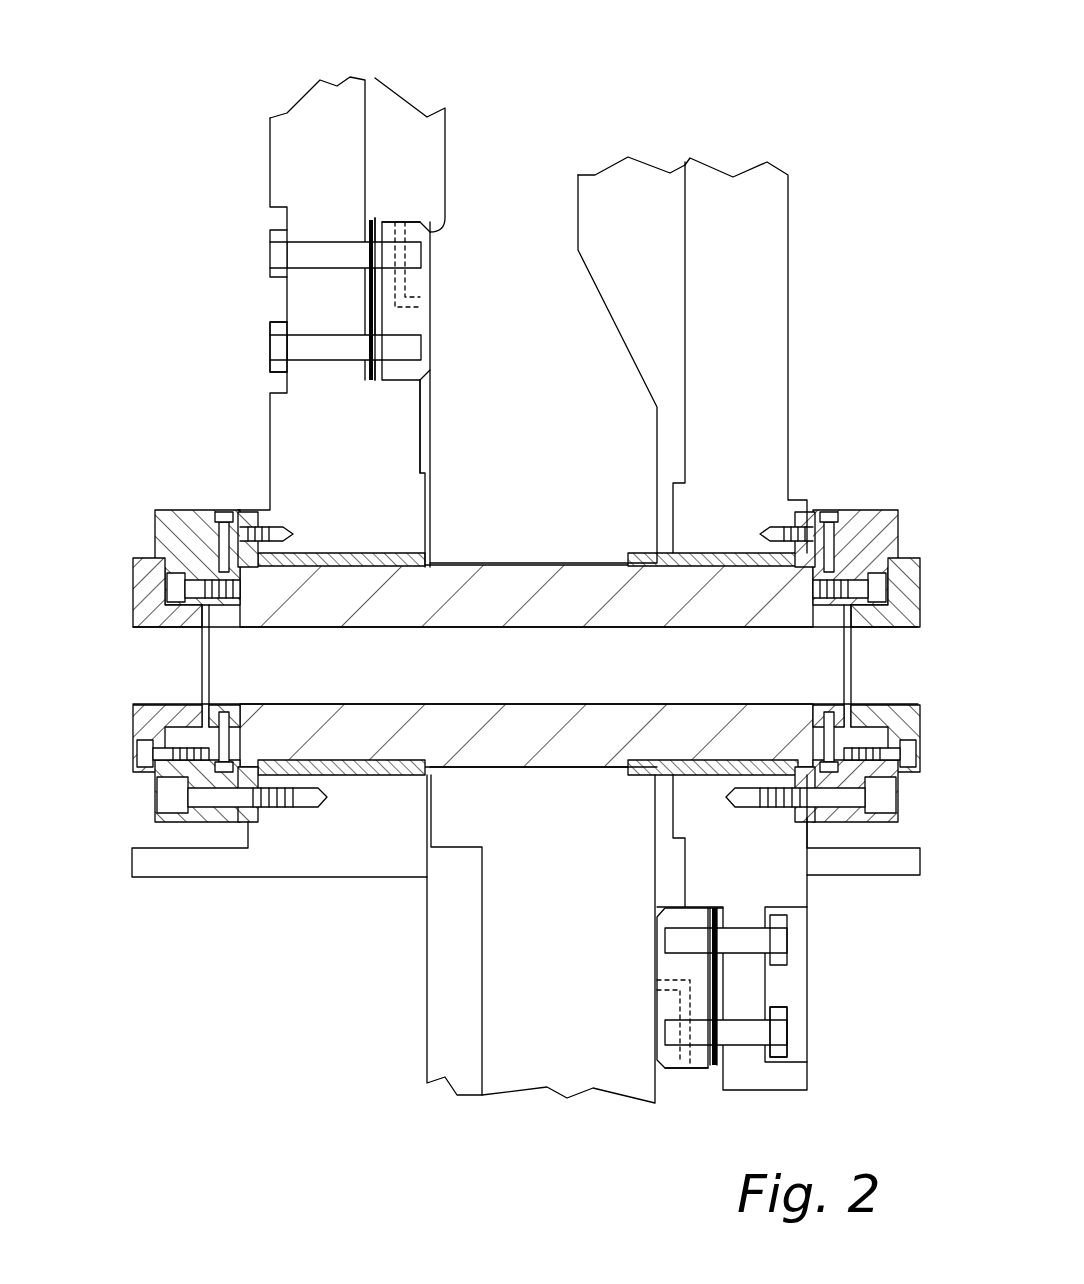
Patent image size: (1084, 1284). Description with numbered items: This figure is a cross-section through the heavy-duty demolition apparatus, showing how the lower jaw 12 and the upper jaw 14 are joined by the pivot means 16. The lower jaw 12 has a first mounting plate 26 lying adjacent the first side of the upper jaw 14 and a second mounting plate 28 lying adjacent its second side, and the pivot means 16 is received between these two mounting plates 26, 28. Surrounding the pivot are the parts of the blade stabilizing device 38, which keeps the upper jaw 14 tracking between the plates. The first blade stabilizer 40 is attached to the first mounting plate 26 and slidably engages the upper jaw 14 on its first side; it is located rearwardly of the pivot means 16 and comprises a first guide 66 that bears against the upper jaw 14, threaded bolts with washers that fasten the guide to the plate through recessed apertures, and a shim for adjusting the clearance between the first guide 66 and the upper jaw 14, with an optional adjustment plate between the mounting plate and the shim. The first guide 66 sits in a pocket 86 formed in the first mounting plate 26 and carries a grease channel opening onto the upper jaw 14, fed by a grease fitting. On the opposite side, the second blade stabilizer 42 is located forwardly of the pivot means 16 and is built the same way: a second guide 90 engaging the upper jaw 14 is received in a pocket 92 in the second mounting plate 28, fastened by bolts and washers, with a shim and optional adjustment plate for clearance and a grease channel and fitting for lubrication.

The lower jaw 12 is at (564, 941).
The upper jaw 14 is at (556, 514).
The pivot means 16 is at (163, 657).
The first mounting plate 26 is at (358, 474).
The second mounting plate 28 is at (751, 859).
The blade stabilizing device 38 is at (483, 301).
The first blade stabilizer 40 is at (483, 301).
The second blade stabilizer 42 is at (613, 1037).
The first guide 66 is at (415, 313).
The pocket 86 is at (397, 380).
The second guide 90 is at (683, 1068).
The pocket 92 is at (708, 907).